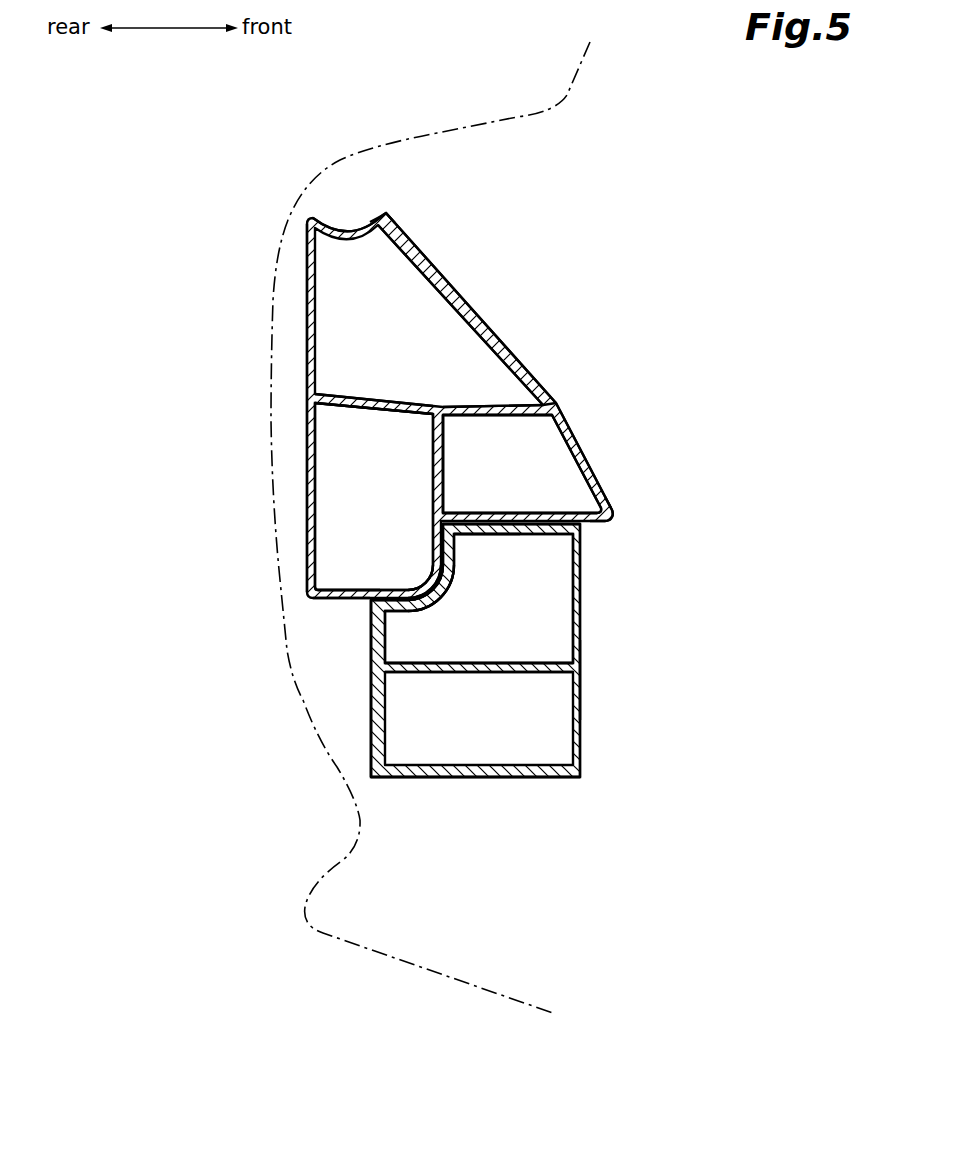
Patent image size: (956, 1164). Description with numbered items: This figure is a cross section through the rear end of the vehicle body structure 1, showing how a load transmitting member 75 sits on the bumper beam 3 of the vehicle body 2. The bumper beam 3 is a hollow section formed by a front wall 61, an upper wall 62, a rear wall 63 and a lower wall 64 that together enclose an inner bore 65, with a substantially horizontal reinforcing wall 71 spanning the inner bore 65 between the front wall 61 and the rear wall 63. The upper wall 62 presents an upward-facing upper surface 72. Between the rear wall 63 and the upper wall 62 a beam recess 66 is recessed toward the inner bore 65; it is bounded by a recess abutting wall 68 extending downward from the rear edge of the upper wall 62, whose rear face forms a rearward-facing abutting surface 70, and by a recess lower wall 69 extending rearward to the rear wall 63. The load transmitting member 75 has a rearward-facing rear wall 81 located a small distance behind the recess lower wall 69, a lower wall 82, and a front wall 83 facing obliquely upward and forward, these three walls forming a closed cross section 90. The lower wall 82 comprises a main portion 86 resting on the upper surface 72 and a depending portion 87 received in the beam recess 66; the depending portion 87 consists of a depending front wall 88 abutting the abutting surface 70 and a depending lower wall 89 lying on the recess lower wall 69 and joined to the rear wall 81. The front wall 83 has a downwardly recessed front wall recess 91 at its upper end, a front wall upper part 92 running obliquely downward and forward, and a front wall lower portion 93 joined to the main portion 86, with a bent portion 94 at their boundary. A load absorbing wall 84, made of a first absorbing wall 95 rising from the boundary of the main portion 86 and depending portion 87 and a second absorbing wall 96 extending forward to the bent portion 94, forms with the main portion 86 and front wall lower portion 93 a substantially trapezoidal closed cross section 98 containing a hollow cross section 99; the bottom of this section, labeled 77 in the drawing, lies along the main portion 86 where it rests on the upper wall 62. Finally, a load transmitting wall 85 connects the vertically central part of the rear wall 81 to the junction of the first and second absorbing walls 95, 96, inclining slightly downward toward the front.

The vehicle body structure 1 is at (277, 216).
The vehicle body 2 is at (440, 124).
The bumper beam 3 is at (580, 677).
The front wall 61 is at (583, 720).
The upper wall 62 is at (530, 537).
The rear wall 63 is at (370, 706).
The lower wall 64 is at (462, 777).
The inner bore 65 is at (533, 636).
The beam recess 66 is at (417, 578).
The recess abutting wall 68 is at (458, 578).
The recess lower wall 69 is at (400, 614).
The abutting surface 70 is at (437, 600).
The reinforcing wall 71 is at (460, 670).
The upper surface 72 is at (485, 537).
The load transmitting member 75 is at (503, 350).
The lower wall of projecting portion 77 is at (560, 512).
The rear wall 81 is at (308, 440).
The lower wall 82 is at (353, 587).
The front wall 83 is at (470, 308).
The load absorbing wall 84 is at (652, 393).
The load transmitting wall 85 is at (372, 400).
The main portion 86 is at (612, 515).
The depending portion 87 is at (367, 587).
The depending front wall 88 is at (438, 567).
The depending lower wall 89 is at (347, 598).
The closed cross section 90 is at (380, 210).
The front wall recess 91 is at (352, 215).
The front wall upper part 92 is at (425, 258).
The front wall lower portion 93 is at (592, 467).
The bent portion 94 is at (550, 405).
The first absorbing wall 95 is at (445, 457).
The second absorbing wall 96 is at (520, 420).
The closed cross section 98 is at (502, 400).
The hollow cross section 99 is at (523, 490).